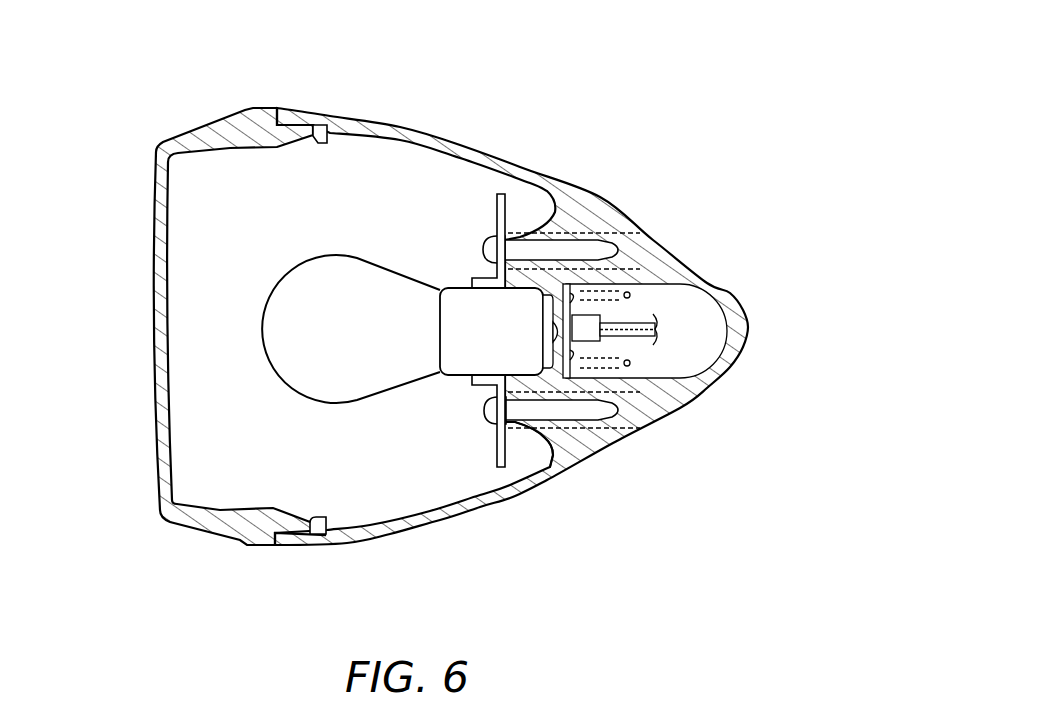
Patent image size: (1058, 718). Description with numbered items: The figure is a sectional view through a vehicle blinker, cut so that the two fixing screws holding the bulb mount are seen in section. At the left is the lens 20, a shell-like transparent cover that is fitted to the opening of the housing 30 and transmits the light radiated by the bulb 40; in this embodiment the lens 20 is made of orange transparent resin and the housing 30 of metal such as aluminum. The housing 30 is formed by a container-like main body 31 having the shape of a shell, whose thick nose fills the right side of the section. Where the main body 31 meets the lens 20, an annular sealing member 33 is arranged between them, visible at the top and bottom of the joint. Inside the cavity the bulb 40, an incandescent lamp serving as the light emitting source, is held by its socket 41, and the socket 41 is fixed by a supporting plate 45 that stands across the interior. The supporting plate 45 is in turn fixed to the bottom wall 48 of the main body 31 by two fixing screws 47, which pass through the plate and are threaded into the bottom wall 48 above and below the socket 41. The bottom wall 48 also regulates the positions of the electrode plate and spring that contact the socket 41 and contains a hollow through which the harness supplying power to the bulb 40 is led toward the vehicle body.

The lens 20 is at (393, 314).
The housing 30 is at (403, 112).
The main body 31 is at (521, 170).
The annular sealing member 33 is at (320, 145).
The bulb 40 is at (357, 272).
The socket 41 is at (460, 297).
The supporting plate 45 is at (493, 447).
The fixing screws 47 is at (487, 248).
The bottom wall 48 is at (545, 455).